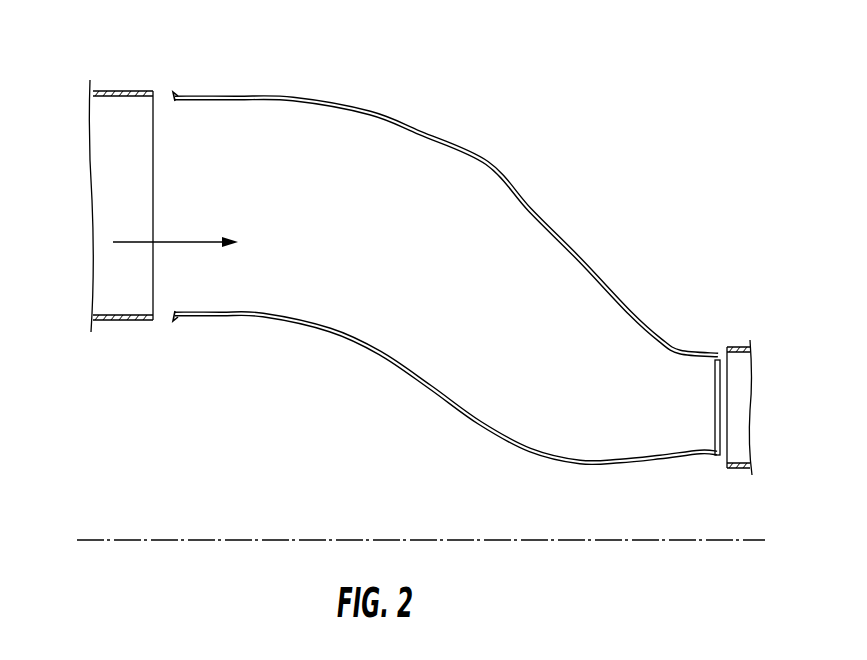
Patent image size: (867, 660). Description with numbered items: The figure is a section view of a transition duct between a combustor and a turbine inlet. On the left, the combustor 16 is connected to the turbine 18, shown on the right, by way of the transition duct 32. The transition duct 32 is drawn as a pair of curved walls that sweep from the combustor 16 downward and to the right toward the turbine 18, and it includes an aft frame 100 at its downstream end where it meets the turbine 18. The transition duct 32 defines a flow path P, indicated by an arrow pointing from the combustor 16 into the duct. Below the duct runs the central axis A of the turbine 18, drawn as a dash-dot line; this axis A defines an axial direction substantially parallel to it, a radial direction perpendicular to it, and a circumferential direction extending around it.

The combustor 16 is at (135, 90).
The transition duct 32 is at (490, 156).
The turbine 18 is at (735, 335).
The aft frame 100 is at (708, 458).
The flow path P is at (199, 244).
The central axis A is at (498, 540).